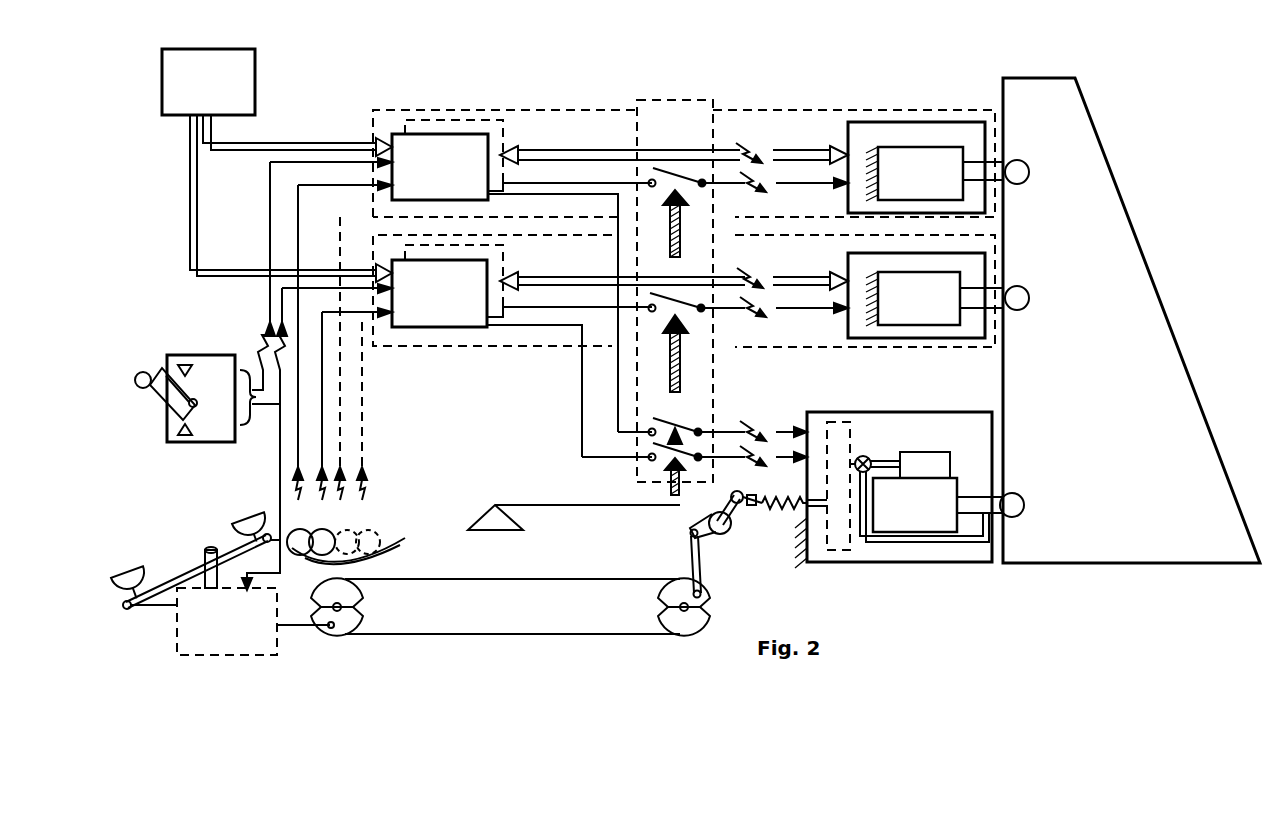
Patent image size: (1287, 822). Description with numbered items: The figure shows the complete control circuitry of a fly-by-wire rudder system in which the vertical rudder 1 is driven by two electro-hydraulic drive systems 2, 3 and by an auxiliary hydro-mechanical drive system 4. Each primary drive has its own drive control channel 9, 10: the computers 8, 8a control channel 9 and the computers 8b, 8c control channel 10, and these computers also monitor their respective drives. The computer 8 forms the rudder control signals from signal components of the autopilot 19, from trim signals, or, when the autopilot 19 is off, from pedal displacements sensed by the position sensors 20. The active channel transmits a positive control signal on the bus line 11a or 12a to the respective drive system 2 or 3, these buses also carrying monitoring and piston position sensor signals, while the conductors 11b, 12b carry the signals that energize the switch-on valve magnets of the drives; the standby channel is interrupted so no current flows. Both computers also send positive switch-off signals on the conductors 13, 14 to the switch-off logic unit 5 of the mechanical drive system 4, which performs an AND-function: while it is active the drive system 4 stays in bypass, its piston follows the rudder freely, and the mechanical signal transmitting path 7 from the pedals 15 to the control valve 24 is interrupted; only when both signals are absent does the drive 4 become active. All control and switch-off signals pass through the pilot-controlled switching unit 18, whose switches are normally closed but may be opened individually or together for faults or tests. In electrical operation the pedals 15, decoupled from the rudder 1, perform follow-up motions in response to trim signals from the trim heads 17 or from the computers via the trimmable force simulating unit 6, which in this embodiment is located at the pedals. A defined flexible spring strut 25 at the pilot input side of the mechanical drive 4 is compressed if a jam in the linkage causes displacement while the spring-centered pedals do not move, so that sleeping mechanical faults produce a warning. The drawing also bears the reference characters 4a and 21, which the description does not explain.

The vertical rudder 1 is at (1190, 398).
The electro-hydraulic drive system 2 is at (892, 132).
The electro-hydraulic drive system 3 is at (975, 267).
The hydro-mechanical drive system 4 is at (975, 552).
The piston of third actuating unit 4a is at (902, 522).
The switch-off logic unit 5 is at (840, 543).
The force simulating unit 6 is at (277, 645).
The mechanical signal transmitting path 7 is at (690, 560).
The computer 8 is at (415, 142).
The computer 8a is at (480, 120).
The computer 8b is at (413, 315).
The computer 8c is at (492, 320).
The drive control channel 9 is at (573, 110).
The drive control channel 10 is at (543, 340).
The bus line 11a is at (582, 160).
The conductor 11b is at (800, 185).
The bus line 12a is at (790, 283).
The conductor 12b is at (798, 311).
The conductor 13 is at (582, 432).
The conductor 14 is at (618, 440).
The pedals 15 is at (180, 570).
The trim heads 17 is at (180, 357).
The switching unit 18 is at (687, 116).
The autopilot 19 is at (243, 88).
The position sensors 20 is at (393, 539).
The wedge 21 is at (475, 515).
The control valve 24 is at (923, 452).
The flexible spring strut 25 is at (777, 510).